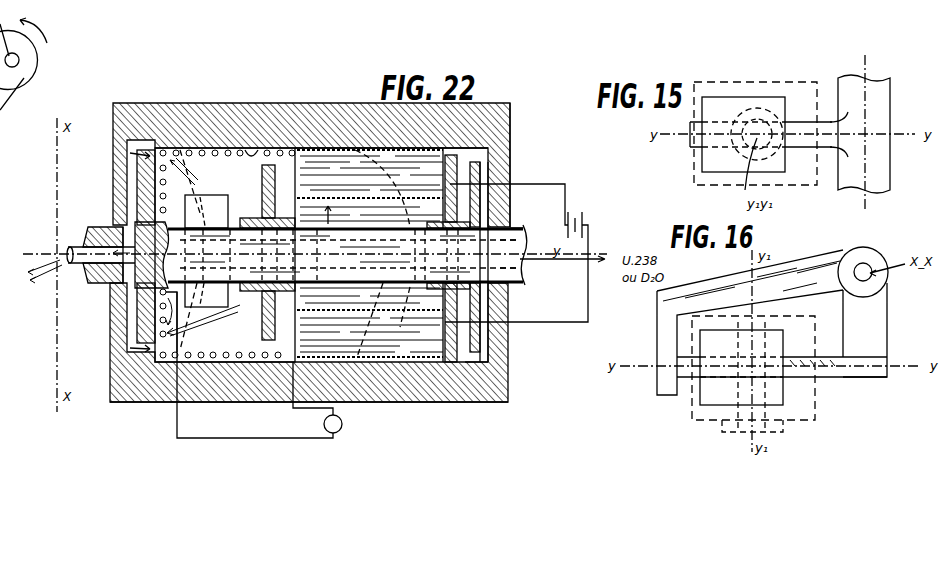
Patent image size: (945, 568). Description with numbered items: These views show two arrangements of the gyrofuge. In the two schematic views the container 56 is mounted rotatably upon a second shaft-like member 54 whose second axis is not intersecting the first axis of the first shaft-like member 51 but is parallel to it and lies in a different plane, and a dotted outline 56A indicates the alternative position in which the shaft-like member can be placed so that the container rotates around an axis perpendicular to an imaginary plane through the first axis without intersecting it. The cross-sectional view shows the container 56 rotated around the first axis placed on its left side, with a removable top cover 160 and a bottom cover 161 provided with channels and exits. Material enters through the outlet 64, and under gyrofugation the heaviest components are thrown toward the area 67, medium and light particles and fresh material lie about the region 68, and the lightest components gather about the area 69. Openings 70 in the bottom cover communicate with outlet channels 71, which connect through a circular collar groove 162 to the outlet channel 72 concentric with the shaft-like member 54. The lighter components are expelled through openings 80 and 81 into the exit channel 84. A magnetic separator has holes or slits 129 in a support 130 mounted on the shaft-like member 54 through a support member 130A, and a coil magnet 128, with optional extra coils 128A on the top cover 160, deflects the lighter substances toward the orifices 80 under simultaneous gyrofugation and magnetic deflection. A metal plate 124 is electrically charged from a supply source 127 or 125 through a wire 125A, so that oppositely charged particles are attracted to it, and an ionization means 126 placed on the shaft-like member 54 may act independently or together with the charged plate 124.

In FIG. 22, the container 56 is at (146, 116).
In FIG. 15, the container 56 is at (713, 100).
In FIG. 16, the container 56 is at (702, 393).
In FIG. 22, the electric coil 128 is at (257, 150).
In FIG. 22, the openings 80 is at (128, 141).
In FIG. 22, the exit channel 84 is at (90, 240).
In FIG. 22, the ionization means 126 is at (206, 205).
In FIG. 22, the second shaft-like member 54 is at (212, 232).
In FIG. 15, the second shaft-like member 54 is at (825, 130).
In FIG. 16, the second shaft-like member 54 is at (862, 374).
In FIG. 22, the support 130 is at (277, 175).
In FIG. 22, the holes or slits 129 is at (276, 197).
In FIG. 22, the support member 130A is at (285, 223).
In FIG. 22, the bottom cover 161 is at (510, 124).
In FIG. 22, the outlet 64 is at (510, 147).
In FIG. 22, the wire 125A is at (544, 184).
In FIG. 22, the supply source 127 is at (586, 221).
In FIG. 22, the outlet channel 72 is at (532, 250).
In FIG. 22, the circular collar groove 162 is at (524, 276).
In FIG. 22, the supply source 125 is at (348, 432).
In FIG. 22, the outlet channels 71 is at (489, 310).
In FIG. 22, the openings 70 is at (508, 360).
In FIG. 22, the metal plate 124 is at (450, 337).
In FIG. 22, the region of medium and light particles 68 is at (386, 397).
In FIG. 22, the area of heaviest components 67 is at (455, 397).
In FIG. 22, the area of lighter components 69 is at (252, 398).
In FIG. 22, the top cover 160 is at (115, 361).
In FIG. 22, the extra coils 128A is at (155, 313).
In FIG. 22, the openings 81 is at (153, 298).
In FIG. 15, the first shaft-like member 51 is at (882, 118).
In FIG. 16, the first shaft-like member 51 is at (880, 335).
In FIG. 15, the block outline 56A is at (810, 182).
In FIG. 16, the block outline 56A is at (705, 420).